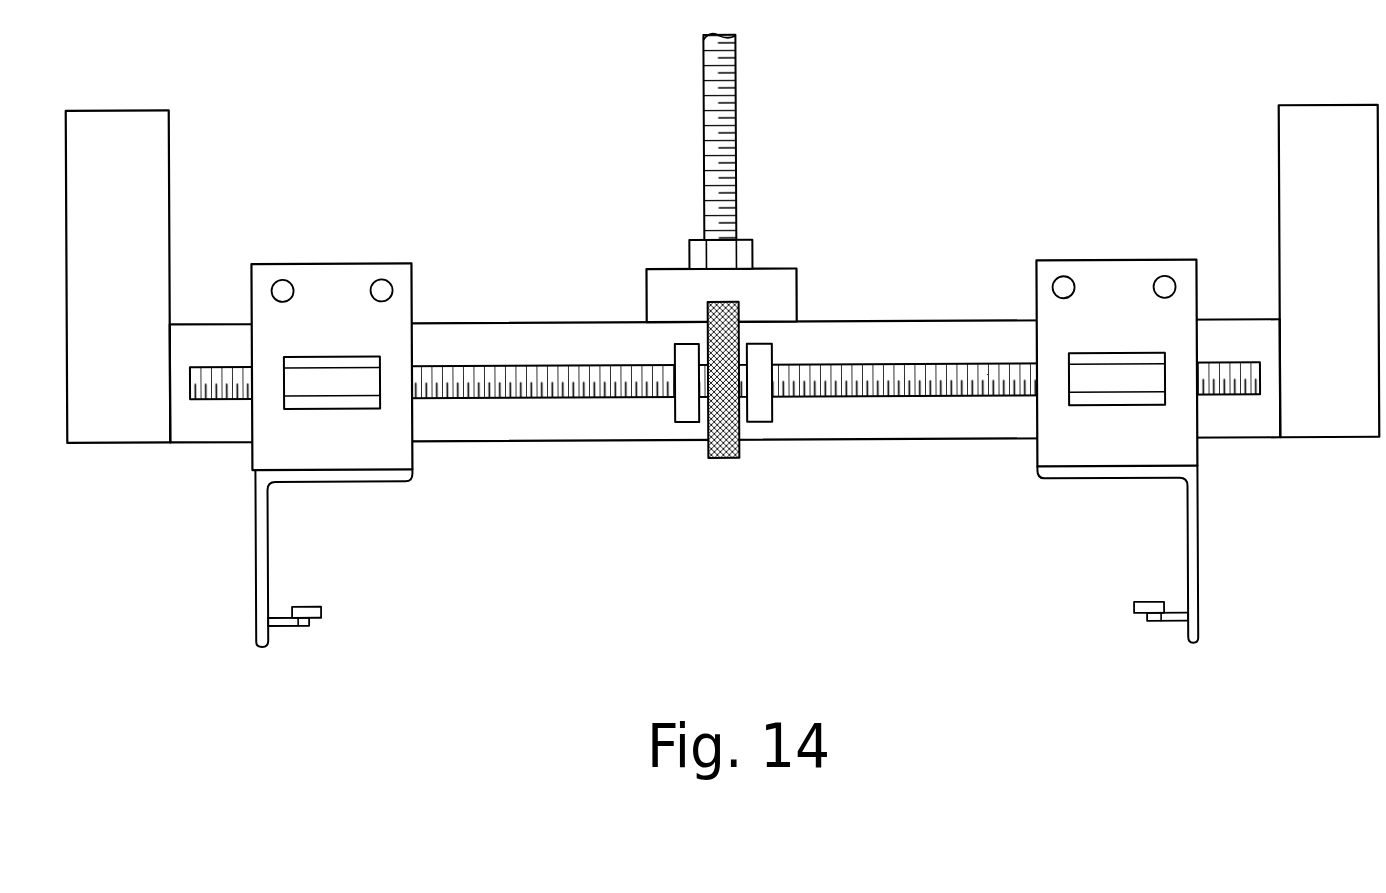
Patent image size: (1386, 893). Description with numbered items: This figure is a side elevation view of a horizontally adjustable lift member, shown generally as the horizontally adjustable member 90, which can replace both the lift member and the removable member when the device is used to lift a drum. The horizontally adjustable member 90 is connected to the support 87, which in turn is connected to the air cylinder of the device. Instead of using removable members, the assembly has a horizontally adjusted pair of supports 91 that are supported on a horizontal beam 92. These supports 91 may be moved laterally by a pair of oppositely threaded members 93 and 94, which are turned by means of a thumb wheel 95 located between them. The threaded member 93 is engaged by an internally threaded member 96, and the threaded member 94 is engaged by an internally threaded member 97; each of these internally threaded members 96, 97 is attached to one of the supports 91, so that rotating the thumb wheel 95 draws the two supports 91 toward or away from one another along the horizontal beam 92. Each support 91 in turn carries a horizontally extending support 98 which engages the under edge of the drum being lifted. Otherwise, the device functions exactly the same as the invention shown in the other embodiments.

The support 87 is at (737, 112).
The horizontally adjustable member 90 is at (980, 132).
The support 91 is at (255, 540).
The horizontal beam 92 is at (535, 337).
The threaded member 93 is at (522, 397).
The threaded member 94 is at (887, 397).
The thumb wheel 95 is at (725, 458).
The internally threaded member 96 is at (321, 383).
The internally threaded member 97 is at (1102, 373).
The horizontally extending support 98 is at (322, 610).